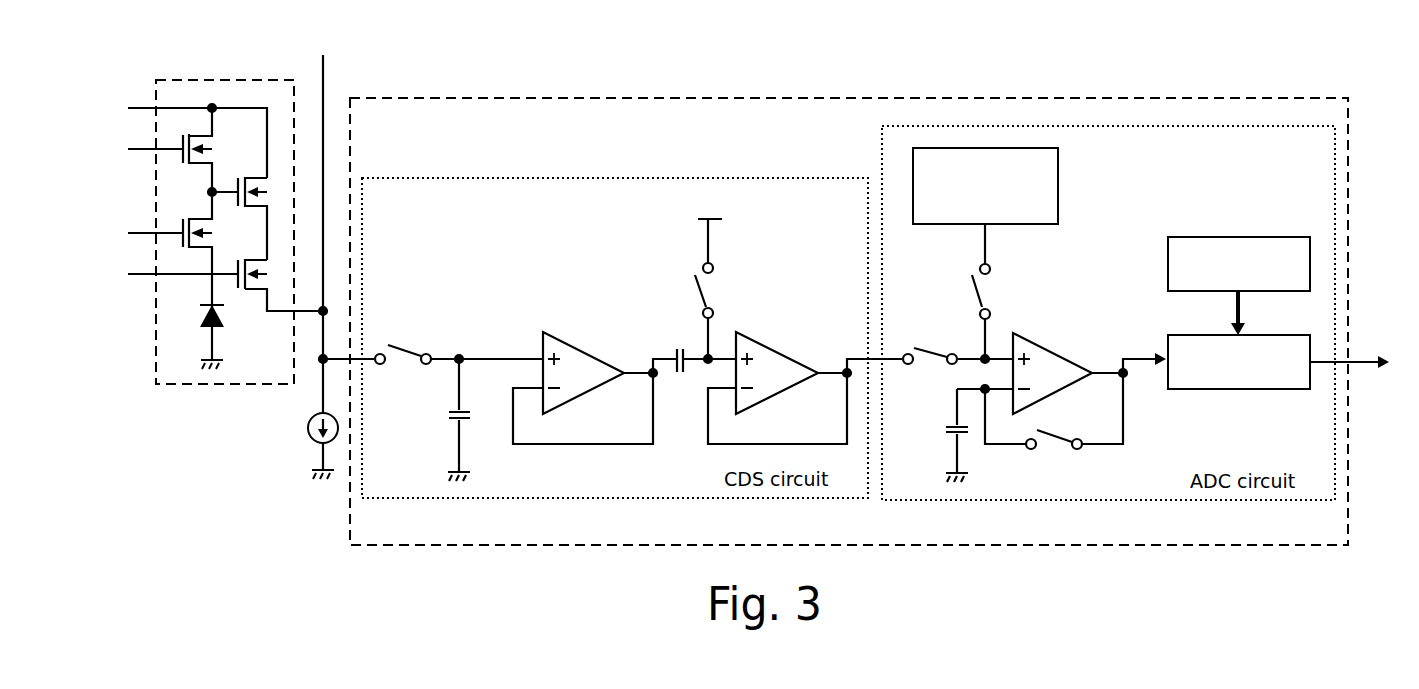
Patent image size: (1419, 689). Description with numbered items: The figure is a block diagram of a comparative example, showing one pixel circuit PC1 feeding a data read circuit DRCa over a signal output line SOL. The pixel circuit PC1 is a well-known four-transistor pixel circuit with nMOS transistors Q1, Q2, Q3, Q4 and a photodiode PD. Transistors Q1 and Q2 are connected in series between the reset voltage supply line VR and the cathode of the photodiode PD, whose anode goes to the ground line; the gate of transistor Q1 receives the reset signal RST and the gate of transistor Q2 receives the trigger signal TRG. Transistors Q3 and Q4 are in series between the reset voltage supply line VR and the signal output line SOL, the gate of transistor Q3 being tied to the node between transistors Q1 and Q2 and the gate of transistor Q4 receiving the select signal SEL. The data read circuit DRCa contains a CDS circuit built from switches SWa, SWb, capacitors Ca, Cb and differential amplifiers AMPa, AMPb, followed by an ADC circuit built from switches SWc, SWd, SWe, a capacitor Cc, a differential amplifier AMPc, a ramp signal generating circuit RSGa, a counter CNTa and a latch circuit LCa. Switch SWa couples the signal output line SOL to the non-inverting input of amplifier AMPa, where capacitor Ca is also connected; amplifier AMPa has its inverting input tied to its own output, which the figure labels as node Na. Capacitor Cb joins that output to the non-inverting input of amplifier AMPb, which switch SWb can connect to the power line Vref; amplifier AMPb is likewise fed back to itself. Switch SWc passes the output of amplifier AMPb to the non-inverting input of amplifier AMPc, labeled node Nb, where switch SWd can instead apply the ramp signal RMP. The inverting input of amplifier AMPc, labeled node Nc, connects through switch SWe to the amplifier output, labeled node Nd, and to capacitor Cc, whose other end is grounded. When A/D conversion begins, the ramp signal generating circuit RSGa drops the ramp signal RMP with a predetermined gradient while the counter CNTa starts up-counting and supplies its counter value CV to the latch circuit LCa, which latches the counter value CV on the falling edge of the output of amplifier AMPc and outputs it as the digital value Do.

The pixel circuit PC1 is at (282, 373).
The reset voltage supply line VR is at (184, 137).
The reset signal RST is at (135, 149).
The trigger signal TRG is at (134, 233).
The select signal SEL is at (162, 274).
The nMOS transistor Q1 is at (191, 150).
The nMOS transistor Q2 is at (193, 246).
The nMOS transistor Q3 is at (239, 206).
The nMOS transistor Q4 is at (277, 275).
The photodiode PD is at (197, 337).
The signal output line SOL is at (339, 255).
The data read circuit DRCa is at (1331, 532).
The switch SWa is at (417, 367).
The capacitor Ca is at (445, 418).
The differential amplifier AMPa is at (556, 387).
The node a Na is at (652, 364).
The capacitor Cb is at (700, 376).
The power line Vref is at (706, 229).
The switch SWb is at (728, 313).
The differential amplifier AMPb is at (805, 387).
The switch SWc is at (958, 369).
The node b Nb is at (973, 349).
The node c Nc is at (985, 379).
The ramp signal generating circuit RSGa is at (1052, 223).
The ramp signal RMP is at (1007, 244).
The switch SWd is at (1005, 311).
The differential amplifier AMPc is at (1089, 371).
The node d Nd is at (1136, 384).
The switch SWe is at (1054, 424).
The capacitor Cc is at (942, 435).
The counter CNTa is at (1219, 289).
The counter value CV is at (1252, 313).
The latch circuit LCa is at (1297, 387).
The digital value Do is at (1364, 363).